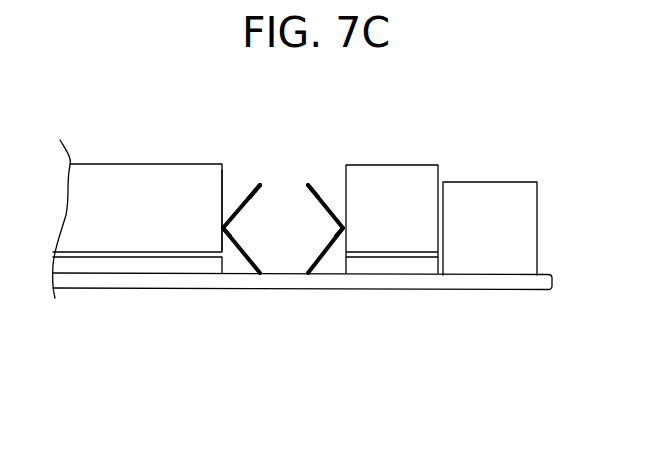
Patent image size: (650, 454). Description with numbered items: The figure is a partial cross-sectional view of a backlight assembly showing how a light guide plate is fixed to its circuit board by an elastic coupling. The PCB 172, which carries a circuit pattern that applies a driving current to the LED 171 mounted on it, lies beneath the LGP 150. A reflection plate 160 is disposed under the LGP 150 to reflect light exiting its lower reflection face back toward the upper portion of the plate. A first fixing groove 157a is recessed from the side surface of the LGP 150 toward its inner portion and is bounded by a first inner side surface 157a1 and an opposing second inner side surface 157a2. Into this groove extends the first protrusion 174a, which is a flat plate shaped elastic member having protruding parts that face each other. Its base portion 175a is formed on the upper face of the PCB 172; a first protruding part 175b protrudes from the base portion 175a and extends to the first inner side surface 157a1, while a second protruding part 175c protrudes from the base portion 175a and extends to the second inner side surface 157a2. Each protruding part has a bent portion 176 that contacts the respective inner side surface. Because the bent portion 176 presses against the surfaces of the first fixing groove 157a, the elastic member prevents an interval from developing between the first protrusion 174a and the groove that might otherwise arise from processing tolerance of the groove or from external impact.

The light guide plate 150 is at (132, 176).
The second inner side surface 157a2 is at (223, 187).
The first protrusion 174a is at (259, 185).
The first fixing groove 157a is at (283, 173).
The first inner side surface 157a1 is at (345, 187).
The reflection plate 160 is at (124, 266).
The first protruding part 175b is at (245, 250).
The bent portion 176 is at (224, 231).
The base portion 175a is at (342, 230).
The second protruding part 175c is at (325, 250).
The PCB 172 is at (463, 283).
The LED 171 is at (508, 272).